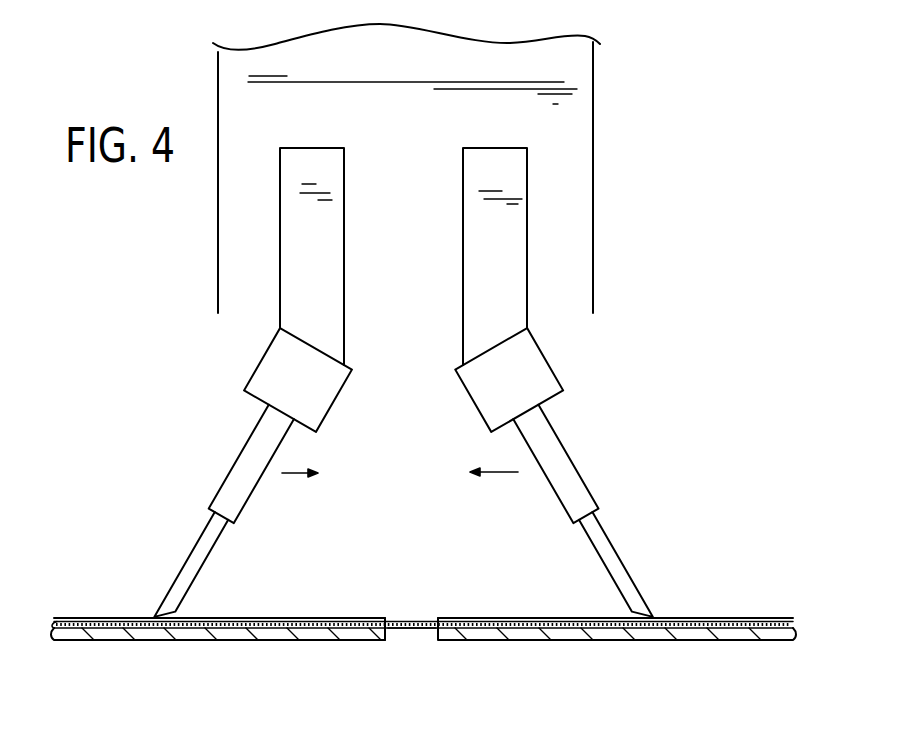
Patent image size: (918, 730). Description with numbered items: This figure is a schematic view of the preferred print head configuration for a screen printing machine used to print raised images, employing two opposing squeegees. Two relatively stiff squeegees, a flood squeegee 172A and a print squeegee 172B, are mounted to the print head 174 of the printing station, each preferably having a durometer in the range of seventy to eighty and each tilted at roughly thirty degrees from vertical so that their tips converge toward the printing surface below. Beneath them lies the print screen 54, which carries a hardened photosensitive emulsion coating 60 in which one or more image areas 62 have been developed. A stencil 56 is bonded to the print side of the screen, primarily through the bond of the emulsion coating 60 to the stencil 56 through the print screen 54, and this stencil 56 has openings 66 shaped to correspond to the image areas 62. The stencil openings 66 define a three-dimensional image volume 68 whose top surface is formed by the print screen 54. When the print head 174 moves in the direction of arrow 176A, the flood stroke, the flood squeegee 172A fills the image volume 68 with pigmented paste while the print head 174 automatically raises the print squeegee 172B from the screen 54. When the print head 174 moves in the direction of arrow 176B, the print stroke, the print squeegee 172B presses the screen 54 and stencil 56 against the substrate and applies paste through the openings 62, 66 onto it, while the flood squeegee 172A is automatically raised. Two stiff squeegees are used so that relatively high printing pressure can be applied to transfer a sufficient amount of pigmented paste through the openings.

The print head 174 is at (573, 159).
The flood squeegee 172A is at (183, 568).
The print squeegee 172B is at (608, 549).
The flood stroke direction arrow 176A is at (297, 489).
The print stroke direction arrow 176B is at (497, 488).
The hardened photosensitive emulsion coating 60 is at (725, 618).
The print screen 54 is at (797, 614).
The stencil 56 is at (790, 639).
The image areas 62 is at (384, 620).
The stencil openings 66 is at (387, 641).
The image volume 68 is at (410, 635).